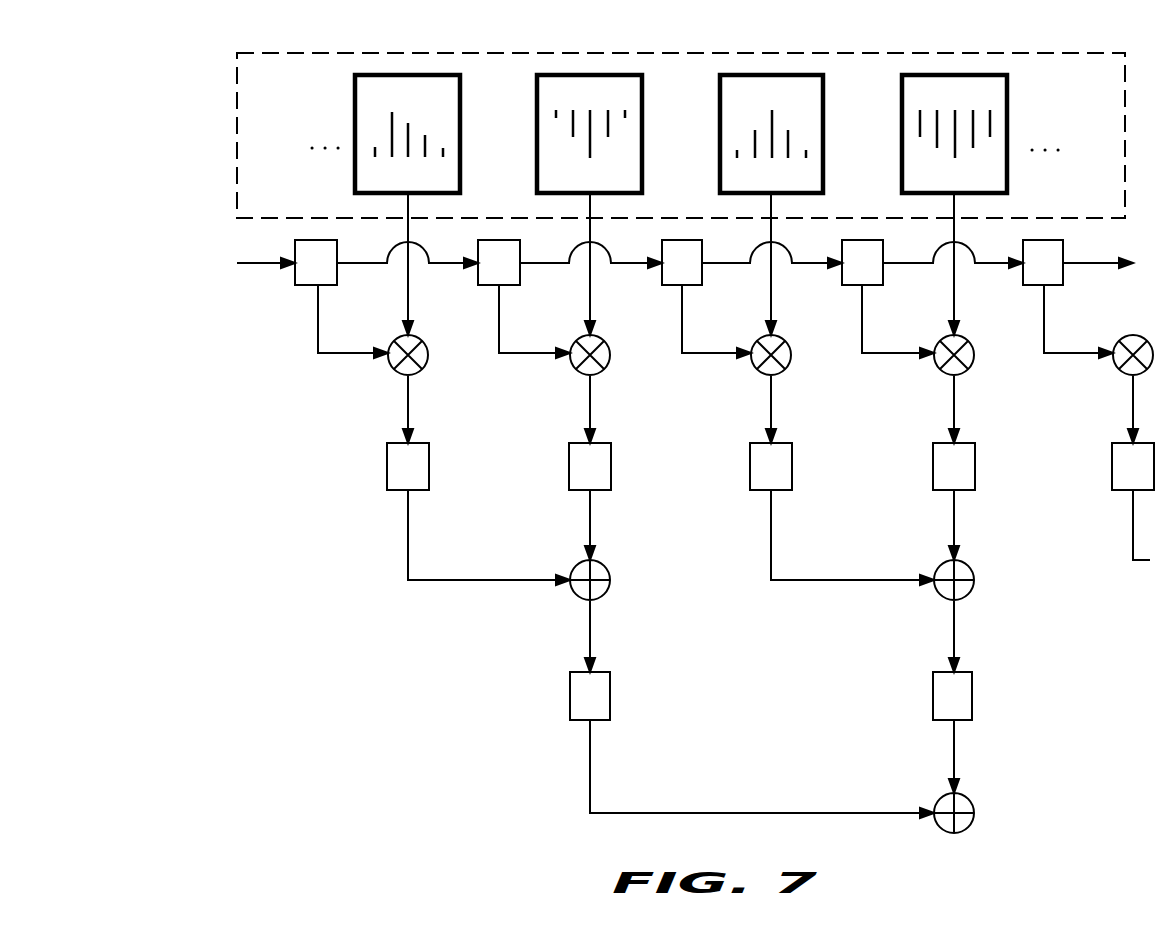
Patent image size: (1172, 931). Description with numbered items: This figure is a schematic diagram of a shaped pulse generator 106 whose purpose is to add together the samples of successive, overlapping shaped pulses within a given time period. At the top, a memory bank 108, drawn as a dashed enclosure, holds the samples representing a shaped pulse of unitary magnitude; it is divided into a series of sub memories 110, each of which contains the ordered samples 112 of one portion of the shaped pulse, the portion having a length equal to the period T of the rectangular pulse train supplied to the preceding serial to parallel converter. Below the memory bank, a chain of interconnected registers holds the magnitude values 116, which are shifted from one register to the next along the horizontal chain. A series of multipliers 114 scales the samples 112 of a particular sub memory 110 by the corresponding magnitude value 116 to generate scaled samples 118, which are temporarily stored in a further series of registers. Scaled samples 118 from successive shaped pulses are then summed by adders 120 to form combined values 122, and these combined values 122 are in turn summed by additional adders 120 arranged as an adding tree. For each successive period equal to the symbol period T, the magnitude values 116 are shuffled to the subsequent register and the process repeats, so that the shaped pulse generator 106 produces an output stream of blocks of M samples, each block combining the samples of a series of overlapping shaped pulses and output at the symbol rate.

The shaped pulse generator 106 is at (252, 476).
The memory bank 108 is at (236, 113).
The sub memory 110 is at (435, 75).
The ordered samples 112 is at (392, 125).
The multiplier 114 is at (570, 367).
The magnitude value 116 is at (480, 278).
The scaled sample 118 is at (570, 478).
The adder 120 is at (943, 806).
The combined value 122 is at (578, 722).